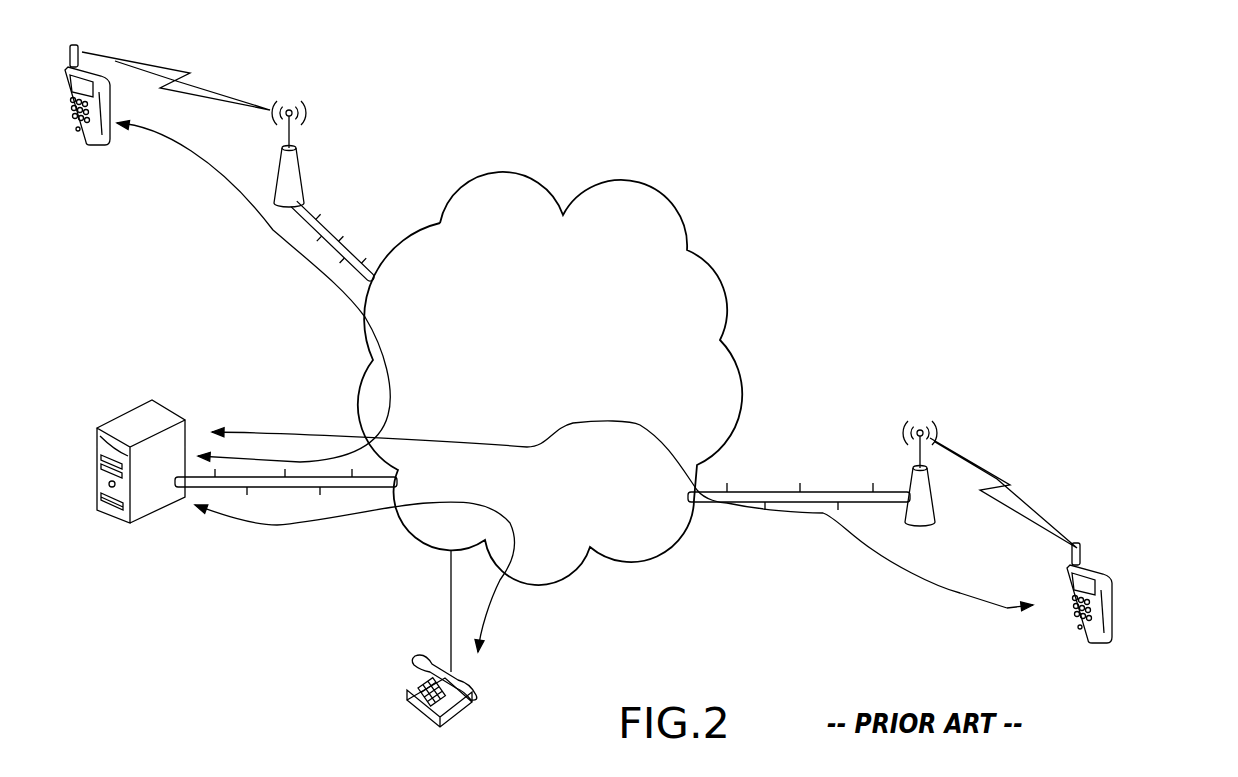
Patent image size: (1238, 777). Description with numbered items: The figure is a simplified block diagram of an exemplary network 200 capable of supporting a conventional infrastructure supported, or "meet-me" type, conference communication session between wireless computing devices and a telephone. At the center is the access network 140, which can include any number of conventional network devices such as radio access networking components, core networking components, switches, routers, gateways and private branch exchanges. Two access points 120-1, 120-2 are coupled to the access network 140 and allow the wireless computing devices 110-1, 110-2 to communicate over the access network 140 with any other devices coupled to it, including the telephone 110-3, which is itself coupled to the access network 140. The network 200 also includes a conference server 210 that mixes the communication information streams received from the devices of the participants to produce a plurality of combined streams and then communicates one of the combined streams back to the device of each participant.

The network 200 is at (907, 188).
The access network 140 is at (708, 257).
The conference server 210 is at (170, 412).
The access point 120-1 is at (300, 173).
The access point 120-2 is at (933, 500).
The wireless computing device 110-1 is at (118, 108).
The wireless computing device 110-2 is at (1113, 602).
The telephone 110-3 is at (483, 672).